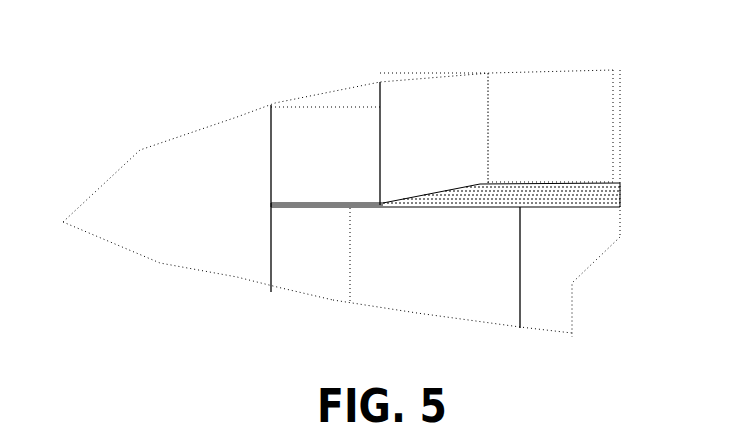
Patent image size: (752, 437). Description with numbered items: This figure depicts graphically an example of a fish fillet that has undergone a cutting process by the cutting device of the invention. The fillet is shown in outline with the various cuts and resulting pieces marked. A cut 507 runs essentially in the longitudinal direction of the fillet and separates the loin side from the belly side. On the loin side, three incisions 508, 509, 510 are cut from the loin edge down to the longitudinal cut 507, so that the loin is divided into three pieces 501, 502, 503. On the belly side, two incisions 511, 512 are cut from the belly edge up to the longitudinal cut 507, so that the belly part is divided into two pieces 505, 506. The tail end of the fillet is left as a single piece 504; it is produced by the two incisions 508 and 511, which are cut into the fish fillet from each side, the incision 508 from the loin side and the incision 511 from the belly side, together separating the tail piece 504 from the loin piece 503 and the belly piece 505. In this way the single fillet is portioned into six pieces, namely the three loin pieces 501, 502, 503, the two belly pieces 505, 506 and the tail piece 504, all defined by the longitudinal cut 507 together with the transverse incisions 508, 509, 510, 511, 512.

The loin piece 501 is at (527, 75).
The loin piece 502 is at (435, 95).
The loin piece 503 is at (313, 105).
The tail piece 504 is at (133, 237).
The belly piece 505 is at (383, 297).
The belly piece 506 is at (562, 280).
The longitudinal cut 507 is at (382, 207).
The loin-side incision 508 is at (275, 155).
The loin-side incision 509 is at (373, 167).
The loin-side incision 510 is at (490, 167).
The belly-side incision 511 is at (270, 238).
The belly-side incision 512 is at (521, 303).